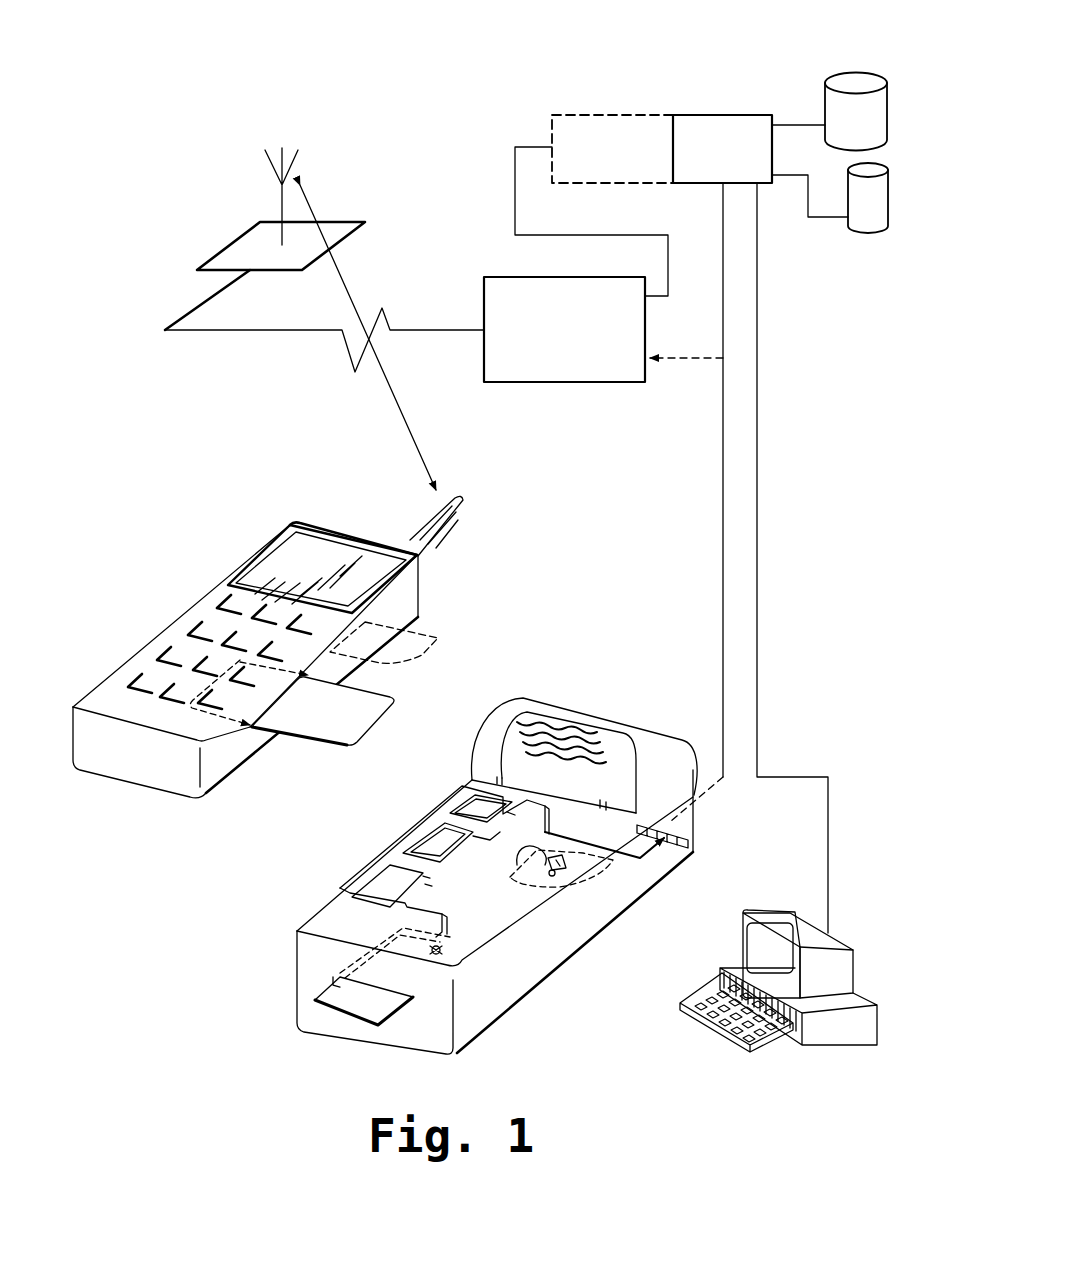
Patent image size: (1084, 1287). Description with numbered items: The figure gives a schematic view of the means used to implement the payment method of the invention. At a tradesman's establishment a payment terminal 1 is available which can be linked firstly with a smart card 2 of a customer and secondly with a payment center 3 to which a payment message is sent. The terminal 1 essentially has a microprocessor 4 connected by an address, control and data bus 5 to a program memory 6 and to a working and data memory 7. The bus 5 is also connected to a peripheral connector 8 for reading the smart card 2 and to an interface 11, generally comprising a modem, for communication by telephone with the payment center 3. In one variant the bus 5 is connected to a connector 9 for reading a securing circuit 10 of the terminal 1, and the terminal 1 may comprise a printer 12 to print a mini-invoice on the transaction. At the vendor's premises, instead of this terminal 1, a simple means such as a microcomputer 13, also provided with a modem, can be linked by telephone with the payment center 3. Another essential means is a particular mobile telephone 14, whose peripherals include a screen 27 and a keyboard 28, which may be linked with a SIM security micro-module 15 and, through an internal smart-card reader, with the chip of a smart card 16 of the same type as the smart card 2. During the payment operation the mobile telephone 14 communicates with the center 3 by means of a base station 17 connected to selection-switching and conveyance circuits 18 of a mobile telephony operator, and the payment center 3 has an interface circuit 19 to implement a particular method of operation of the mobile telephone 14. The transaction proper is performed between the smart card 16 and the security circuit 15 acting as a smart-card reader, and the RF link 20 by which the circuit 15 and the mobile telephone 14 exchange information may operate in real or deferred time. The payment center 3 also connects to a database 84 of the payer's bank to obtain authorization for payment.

The payment terminal 1 is at (512, 982).
The smart card 2 is at (340, 997).
The payment center 3 is at (697, 115).
The microprocessor 4 is at (473, 797).
The address, control and data bus 5 is at (490, 838).
The program memory 6 is at (415, 853).
The working and data memory 7 is at (365, 885).
The peripheral connector 8 is at (447, 922).
The connector 9 is at (557, 855).
The securing circuit 10 is at (615, 862).
The interface 11 is at (690, 832).
The printer 12 is at (508, 713).
The microcomputer 13 is at (880, 1053).
The mobile telephone 14 is at (270, 652).
The SIM security micro-module 15 is at (420, 640).
The smart card 16 is at (343, 727).
The base station 17 is at (232, 250).
The selection-switching and conveyance circuits 18 is at (486, 293).
The interface circuit 19 is at (580, 115).
The RF link 20 is at (330, 283).
The screen 27 is at (307, 538).
The keyboard 28 is at (208, 632).
The database 84 is at (855, 72).